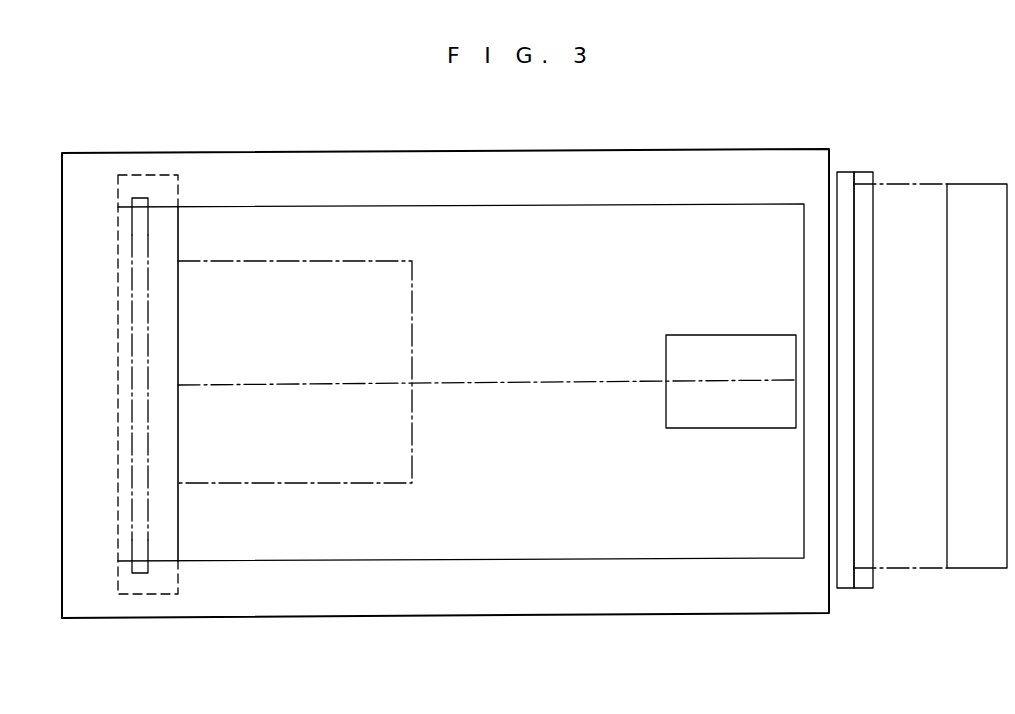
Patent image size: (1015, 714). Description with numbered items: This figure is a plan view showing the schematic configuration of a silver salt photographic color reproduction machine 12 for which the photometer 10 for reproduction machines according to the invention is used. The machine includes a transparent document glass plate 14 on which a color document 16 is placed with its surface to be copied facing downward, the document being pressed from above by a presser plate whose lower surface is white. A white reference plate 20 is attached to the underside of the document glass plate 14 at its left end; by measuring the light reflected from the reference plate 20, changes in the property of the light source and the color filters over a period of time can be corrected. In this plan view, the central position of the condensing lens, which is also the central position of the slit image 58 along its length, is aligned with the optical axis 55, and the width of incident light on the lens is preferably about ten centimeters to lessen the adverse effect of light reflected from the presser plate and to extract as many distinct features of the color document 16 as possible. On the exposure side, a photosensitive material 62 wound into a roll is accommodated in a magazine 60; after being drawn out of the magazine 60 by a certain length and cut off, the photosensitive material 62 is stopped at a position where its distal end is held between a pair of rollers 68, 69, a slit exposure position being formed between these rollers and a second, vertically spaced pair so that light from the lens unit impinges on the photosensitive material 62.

The silver salt photographic color reproduction machine 12 is at (750, 128).
The transparent document glass plate 14 is at (87, 175).
The white reference plate 20 is at (178, 245).
The slit image 58 is at (148, 307).
The color document 16 is at (282, 450).
The optical axis 55 is at (532, 380).
The photometer 10 is at (664, 396).
The roller 69 is at (845, 185).
The roller 68 is at (868, 185).
The photosensitive material 62 is at (889, 556).
The magazine 60 is at (967, 560).